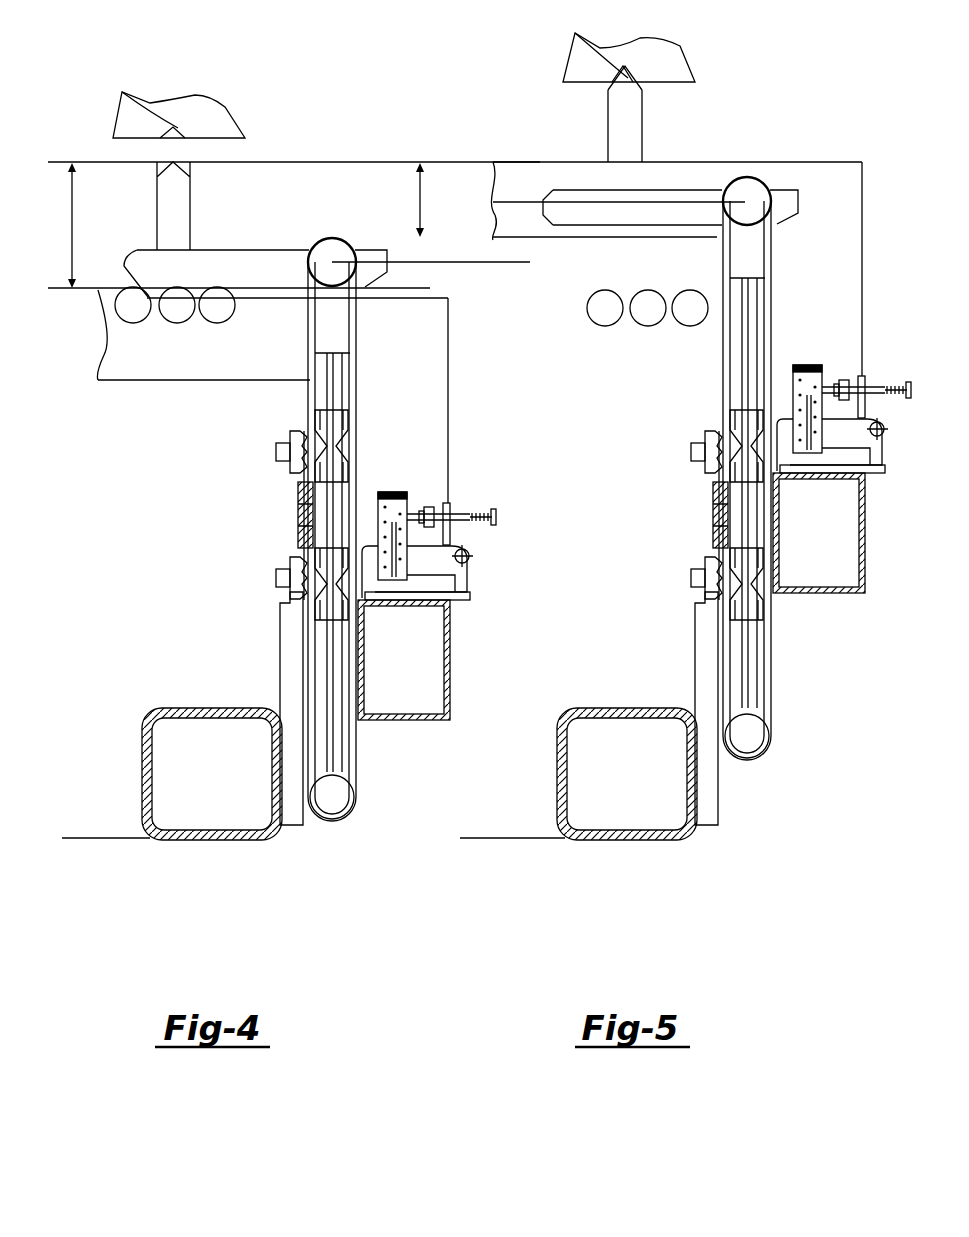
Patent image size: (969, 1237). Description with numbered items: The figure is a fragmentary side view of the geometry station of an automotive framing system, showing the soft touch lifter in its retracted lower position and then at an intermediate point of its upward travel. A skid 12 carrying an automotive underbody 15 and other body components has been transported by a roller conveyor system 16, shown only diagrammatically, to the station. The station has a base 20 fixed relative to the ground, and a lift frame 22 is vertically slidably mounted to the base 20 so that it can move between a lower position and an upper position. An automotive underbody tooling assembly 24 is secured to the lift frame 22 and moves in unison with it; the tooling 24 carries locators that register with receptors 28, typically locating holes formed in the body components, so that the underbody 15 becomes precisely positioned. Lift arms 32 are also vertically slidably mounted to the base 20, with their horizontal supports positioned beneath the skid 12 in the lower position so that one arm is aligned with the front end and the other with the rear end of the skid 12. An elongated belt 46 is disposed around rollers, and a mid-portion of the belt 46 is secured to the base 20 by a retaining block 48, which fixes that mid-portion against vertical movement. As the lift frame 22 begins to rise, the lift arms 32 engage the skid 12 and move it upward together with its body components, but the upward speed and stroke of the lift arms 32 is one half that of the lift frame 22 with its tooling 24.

In FIG. 4, the skid 12 is at (264, 262).
In FIG. 5, the skid 12 is at (677, 195).
In FIG. 4, the automotive underbody 15 is at (226, 116).
In FIG. 5, the automotive underbody 15 is at (680, 63).
In FIG. 4, the roller conveyor system 16 is at (133, 316).
In FIG. 5, the roller conveyor system 16 is at (598, 318).
In FIG. 4, the base 20 is at (297, 534).
In FIG. 4, the lift frame 22 is at (438, 417).
In FIG. 5, the lift frame 22 is at (852, 257).
In FIG. 4, the automotive underbody tooling assembly 24 is at (167, 218).
In FIG. 5, the automotive underbody tooling assembly 24 is at (620, 123).
In FIG. 4, the receptors 28 is at (122, 92).
In FIG. 5, the receptors 28 is at (575, 35).
In FIG. 4, the lift arms 32 is at (300, 329).
In FIG. 4, the elongated belt 46 is at (305, 652).
In FIG. 4, the retaining block 48 is at (300, 492).